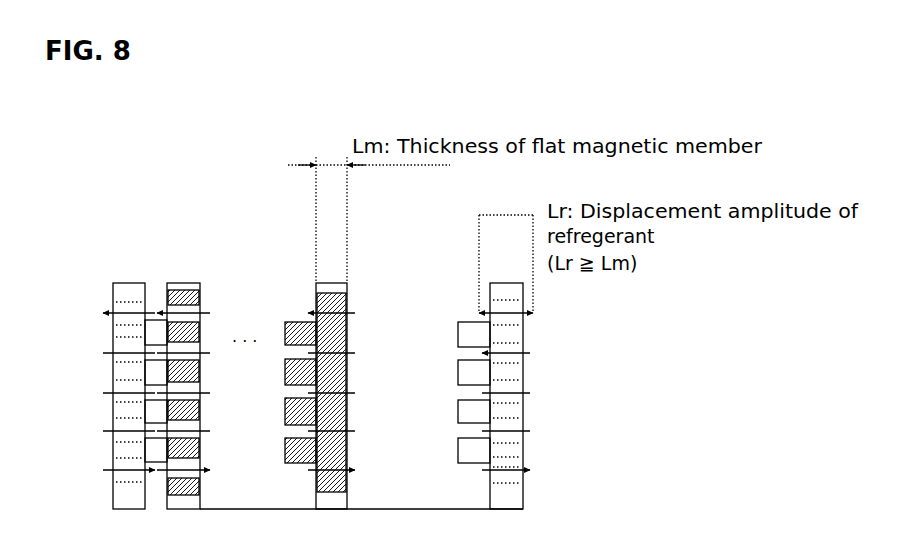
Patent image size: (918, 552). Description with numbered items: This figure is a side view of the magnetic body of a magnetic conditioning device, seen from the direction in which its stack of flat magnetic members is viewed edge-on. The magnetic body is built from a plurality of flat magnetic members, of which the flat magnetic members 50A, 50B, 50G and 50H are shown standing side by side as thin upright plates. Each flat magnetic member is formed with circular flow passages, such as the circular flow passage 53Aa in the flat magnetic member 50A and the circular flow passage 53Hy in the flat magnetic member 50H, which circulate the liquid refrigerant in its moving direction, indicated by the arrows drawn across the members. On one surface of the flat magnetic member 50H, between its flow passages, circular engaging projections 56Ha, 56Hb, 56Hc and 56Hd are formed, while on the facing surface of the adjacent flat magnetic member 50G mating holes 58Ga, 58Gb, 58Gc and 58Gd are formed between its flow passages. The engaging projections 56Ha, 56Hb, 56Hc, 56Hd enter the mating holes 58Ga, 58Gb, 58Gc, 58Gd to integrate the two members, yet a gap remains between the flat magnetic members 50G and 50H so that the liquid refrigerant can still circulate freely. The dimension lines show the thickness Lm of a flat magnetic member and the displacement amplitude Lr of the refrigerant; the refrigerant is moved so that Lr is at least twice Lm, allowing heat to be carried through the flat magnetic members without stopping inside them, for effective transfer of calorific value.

The flat magnetic member 50A is at (129, 282).
The flat magnetic member 50B is at (183, 282).
The flat magnetic member 50G is at (316, 287).
The flat magnetic member 50H is at (490, 287).
The circular flow passage 53Aa is at (115, 302).
The circular flow passage 53Hy is at (526, 467).
The mating hole 58Ga is at (349, 330).
The mating hole 58Gb is at (349, 372).
The mating hole 58Gc is at (349, 413).
The mating hole 58Gd is at (349, 452).
The engaging projection 56Ha is at (458, 342).
The engaging projection 56Hb is at (458, 381).
The engaging projection 56Hc is at (458, 420).
The engaging projection 56Hd is at (458, 461).